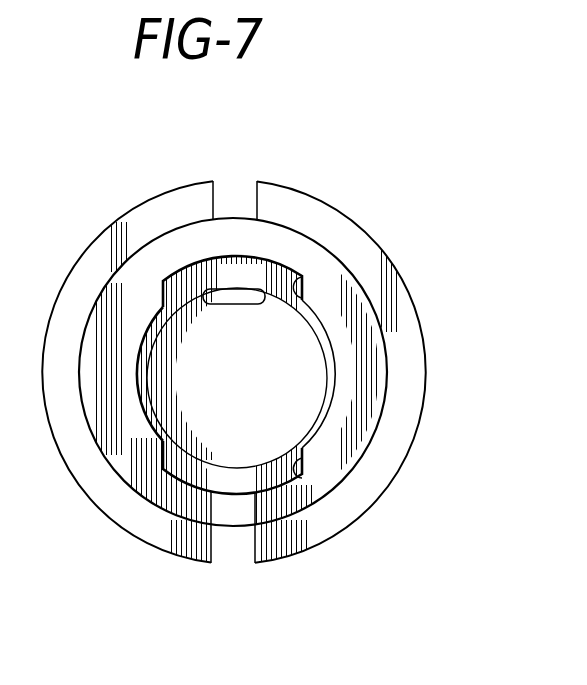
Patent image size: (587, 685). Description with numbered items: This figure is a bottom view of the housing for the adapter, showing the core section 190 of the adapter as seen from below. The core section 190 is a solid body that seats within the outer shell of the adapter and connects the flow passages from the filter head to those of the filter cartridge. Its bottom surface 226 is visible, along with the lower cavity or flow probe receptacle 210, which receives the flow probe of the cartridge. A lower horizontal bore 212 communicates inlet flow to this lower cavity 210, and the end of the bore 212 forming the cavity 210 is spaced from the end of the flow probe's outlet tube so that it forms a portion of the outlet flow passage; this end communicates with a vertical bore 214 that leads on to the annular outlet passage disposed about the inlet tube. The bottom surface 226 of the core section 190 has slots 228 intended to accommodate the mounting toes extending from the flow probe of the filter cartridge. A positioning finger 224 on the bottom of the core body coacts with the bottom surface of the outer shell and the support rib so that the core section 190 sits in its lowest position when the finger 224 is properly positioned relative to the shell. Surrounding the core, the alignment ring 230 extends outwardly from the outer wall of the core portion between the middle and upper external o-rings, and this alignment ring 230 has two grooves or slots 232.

The core section 190 is at (428, 262).
The lower cavity or flow probe receptacle 210 is at (312, 357).
The lower horizontal bore 212 is at (293, 405).
The vertical bore 214 is at (252, 297).
The positioning finger 224 is at (203, 500).
The bottom surface 226 is at (374, 368).
The slots 228 is at (302, 278).
The alignment ring 230 is at (101, 477).
The grooves or slots 232 is at (214, 196).